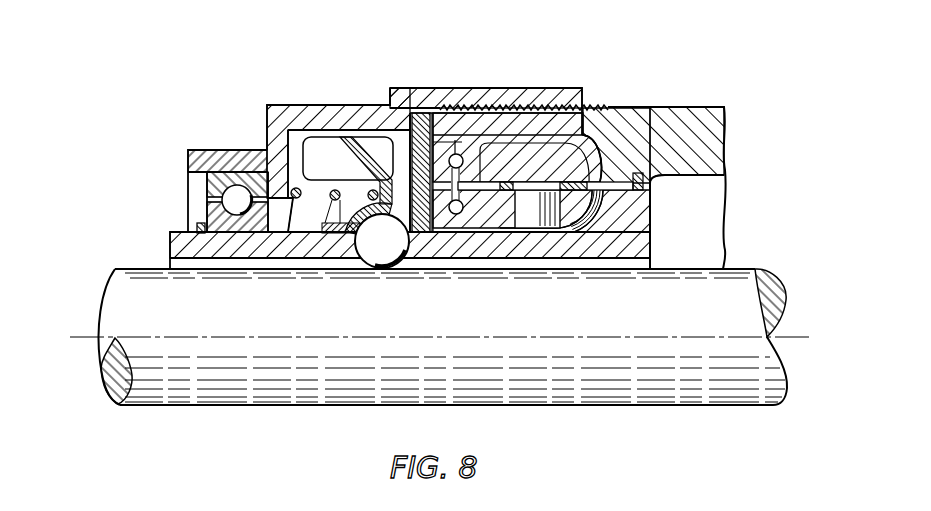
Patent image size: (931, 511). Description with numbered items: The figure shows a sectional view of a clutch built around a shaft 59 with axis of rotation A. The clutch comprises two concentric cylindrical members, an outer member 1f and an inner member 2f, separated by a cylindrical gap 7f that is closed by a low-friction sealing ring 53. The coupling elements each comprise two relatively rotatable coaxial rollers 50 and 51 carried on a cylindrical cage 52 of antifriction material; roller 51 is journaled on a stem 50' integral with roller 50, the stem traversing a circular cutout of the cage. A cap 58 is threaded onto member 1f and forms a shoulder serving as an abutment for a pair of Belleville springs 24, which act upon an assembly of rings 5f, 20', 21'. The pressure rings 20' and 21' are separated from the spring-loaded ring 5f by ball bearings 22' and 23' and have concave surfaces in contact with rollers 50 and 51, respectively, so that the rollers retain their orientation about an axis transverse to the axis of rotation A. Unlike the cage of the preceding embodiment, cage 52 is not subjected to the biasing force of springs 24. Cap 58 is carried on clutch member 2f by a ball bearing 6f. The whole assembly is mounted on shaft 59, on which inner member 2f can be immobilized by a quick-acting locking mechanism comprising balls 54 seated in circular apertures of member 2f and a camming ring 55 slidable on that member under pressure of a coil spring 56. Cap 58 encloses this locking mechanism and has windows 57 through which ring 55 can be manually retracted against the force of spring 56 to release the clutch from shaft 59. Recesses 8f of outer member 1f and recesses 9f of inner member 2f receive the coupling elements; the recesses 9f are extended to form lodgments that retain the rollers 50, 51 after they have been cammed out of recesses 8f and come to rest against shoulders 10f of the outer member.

The outer cylindrical clutch member 1f is at (702, 130).
The inner cylindrical clutch member 2f is at (637, 243).
The spring-loaded ring 5f is at (432, 112).
The ball bearing 6f is at (236, 194).
The cylindrical gap 7f is at (630, 192).
The recesses of outer member 8f is at (620, 172).
The recesses of inner member 9f is at (602, 228).
The shoulders 10f is at (528, 111).
The pressure ring 20' is at (518, 104).
The pressure ring 21' is at (472, 230).
The ball bearing 22' is at (447, 103).
The ball bearing 23' is at (446, 264).
The Belleville springs 24 is at (413, 111).
The roller 50 is at (506, 128).
The stem 50' is at (537, 248).
The roller 51 is at (502, 229).
The cylindrical cage 52 is at (597, 140).
The low-friction sealing ring 53 is at (638, 173).
The balls 54 is at (378, 252).
The camming ring 55 is at (342, 137).
The coil spring 56 is at (334, 190).
The windows 57 is at (318, 140).
The cap 58 is at (277, 107).
The shaft 59 is at (308, 387).
The axis of rotation A is at (81, 337).